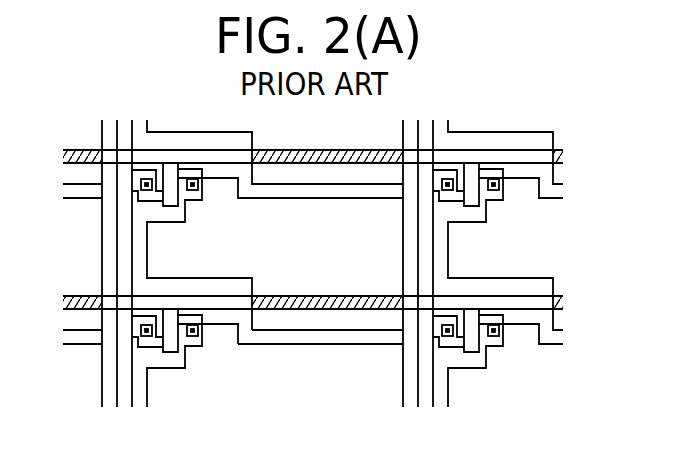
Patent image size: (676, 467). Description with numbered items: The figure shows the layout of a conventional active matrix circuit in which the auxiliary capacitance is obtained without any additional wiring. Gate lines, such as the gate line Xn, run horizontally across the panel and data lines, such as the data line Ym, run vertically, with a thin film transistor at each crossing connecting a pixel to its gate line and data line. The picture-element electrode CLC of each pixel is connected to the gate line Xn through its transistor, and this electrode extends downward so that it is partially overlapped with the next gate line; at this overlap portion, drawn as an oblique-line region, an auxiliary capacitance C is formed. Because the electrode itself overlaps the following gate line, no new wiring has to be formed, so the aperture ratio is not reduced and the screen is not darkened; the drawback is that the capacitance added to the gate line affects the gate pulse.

The gate line Xn is at (331, 165).
The data line Ym is at (122, 288).
The picture-element electrode CLC is at (156, 250).
The auxiliary capacitance C is at (320, 362).